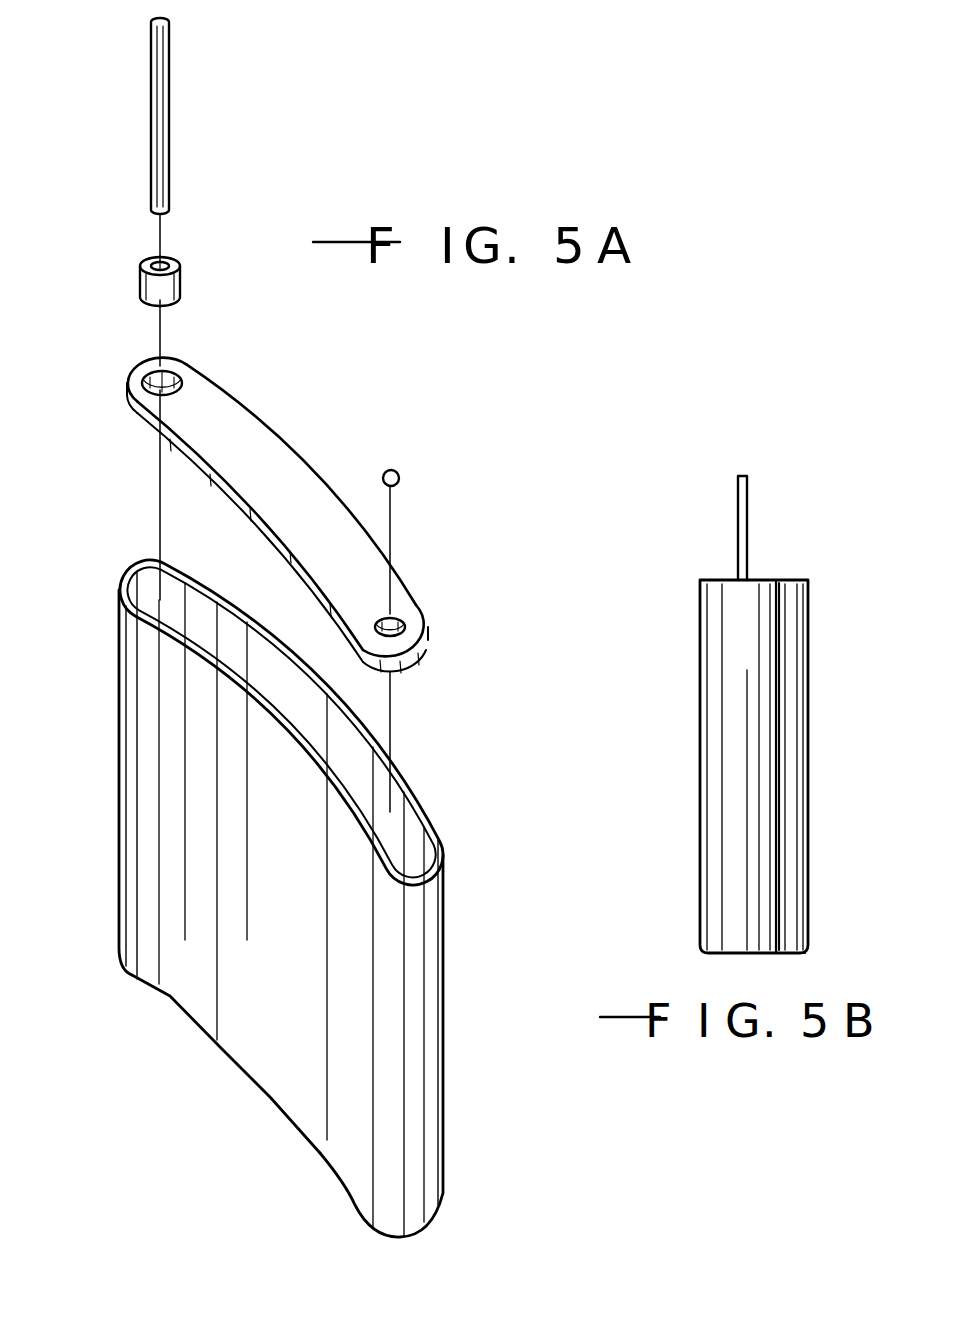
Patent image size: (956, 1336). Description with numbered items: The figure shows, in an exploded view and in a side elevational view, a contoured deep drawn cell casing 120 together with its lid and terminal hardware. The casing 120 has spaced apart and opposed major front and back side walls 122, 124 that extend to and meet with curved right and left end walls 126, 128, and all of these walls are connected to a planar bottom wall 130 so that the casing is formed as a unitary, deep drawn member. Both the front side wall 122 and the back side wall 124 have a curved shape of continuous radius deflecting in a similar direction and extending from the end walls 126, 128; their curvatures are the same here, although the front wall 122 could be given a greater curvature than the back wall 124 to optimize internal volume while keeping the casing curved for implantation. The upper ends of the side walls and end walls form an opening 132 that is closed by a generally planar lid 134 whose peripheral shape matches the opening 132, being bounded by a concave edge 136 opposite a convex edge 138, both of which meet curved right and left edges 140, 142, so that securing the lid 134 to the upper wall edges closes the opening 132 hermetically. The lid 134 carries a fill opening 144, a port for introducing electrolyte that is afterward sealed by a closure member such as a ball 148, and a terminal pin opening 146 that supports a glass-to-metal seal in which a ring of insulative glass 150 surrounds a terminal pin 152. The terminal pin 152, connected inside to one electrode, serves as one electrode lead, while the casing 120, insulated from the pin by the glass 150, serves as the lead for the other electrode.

In FIG. 5A, the casing 120 is at (512, 436).
In FIG. 5A, the front side wall 122 is at (248, 1035).
In FIG. 5A, the back side wall 124 is at (358, 718).
In FIG. 5B, the back side wall 124 is at (787, 660).
In FIG. 5A, the right end wall 126 is at (413, 1005).
In FIG. 5B, the right end wall 126 is at (745, 731).
In FIG. 5A, the left end wall 128 is at (120, 818).
In FIG. 5B, the bottom wall 130 is at (755, 956).
In FIG. 5A, the opening 132 is at (356, 813).
In FIG. 5A, the lid 134 is at (341, 567).
In FIG. 5B, the lid 134 is at (757, 579).
In FIG. 5A, the concave edge 136 is at (254, 512).
In FIG. 5A, the convex edge 138 is at (285, 440).
In FIG. 5A, the right edge 140 is at (418, 666).
In FIG. 5A, the left edge 142 is at (138, 359).
In FIG. 5A, the fill opening 144 is at (400, 623).
In FIG. 5A, the terminal pin opening 146 is at (178, 372).
In FIG. 5A, the ball 148 is at (394, 468).
In FIG. 5A, the ring of insulative glass 150 is at (180, 282).
In FIG. 5A, the terminal pin 152 is at (168, 152).
In FIG. 5B, the terminal pin 152 is at (748, 498).